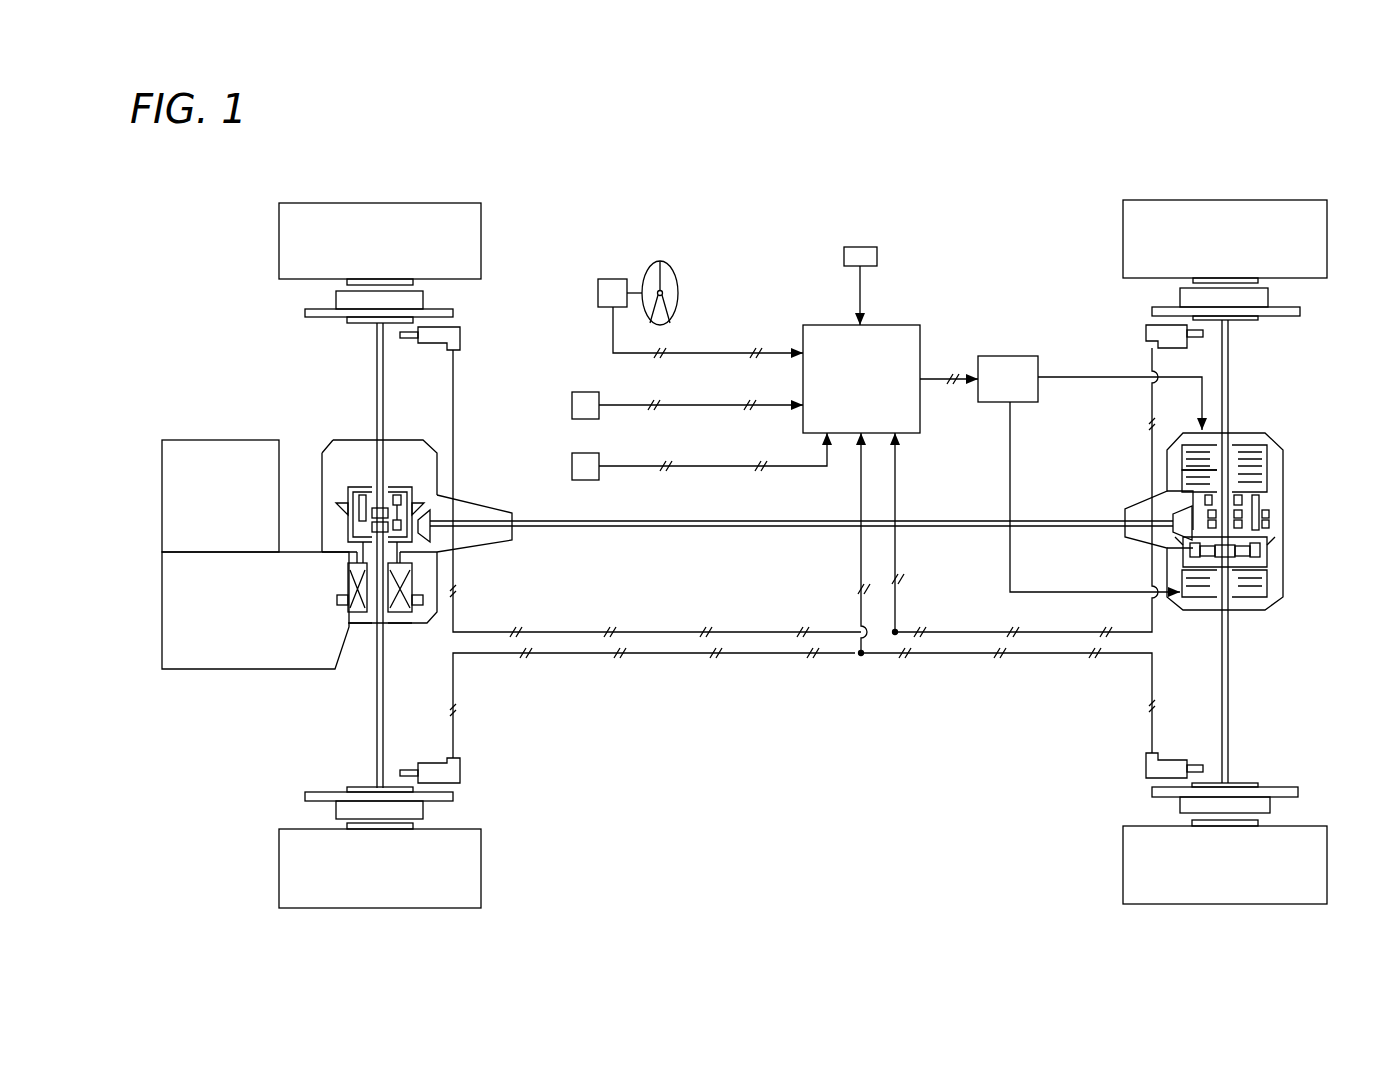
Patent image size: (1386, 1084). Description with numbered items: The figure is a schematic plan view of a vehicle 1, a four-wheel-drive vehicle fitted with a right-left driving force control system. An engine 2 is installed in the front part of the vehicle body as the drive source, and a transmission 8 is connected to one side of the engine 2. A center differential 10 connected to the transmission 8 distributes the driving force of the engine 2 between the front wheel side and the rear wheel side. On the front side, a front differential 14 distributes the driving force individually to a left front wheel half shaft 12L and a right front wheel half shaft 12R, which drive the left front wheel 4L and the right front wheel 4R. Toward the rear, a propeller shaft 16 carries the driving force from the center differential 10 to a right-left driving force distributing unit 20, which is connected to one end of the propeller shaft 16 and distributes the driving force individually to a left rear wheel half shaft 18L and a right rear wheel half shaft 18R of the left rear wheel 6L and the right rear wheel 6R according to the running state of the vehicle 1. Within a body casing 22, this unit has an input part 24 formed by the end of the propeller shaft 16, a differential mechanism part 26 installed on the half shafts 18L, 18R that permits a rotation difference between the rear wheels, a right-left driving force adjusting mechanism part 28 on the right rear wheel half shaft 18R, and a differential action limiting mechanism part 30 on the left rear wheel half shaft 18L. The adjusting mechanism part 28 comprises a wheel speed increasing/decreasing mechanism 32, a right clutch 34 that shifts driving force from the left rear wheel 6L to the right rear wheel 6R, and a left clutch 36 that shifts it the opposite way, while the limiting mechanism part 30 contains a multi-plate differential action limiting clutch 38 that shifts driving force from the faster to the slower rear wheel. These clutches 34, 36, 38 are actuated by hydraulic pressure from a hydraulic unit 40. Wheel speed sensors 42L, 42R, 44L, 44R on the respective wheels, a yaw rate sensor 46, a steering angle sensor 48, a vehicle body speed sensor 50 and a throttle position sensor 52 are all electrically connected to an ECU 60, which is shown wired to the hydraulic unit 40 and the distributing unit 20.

The vehicle 1 is at (670, 222).
The engine 2 is at (180, 440).
The right front wheel 4R is at (481, 215).
The left front wheel 4L is at (481, 882).
The right rear wheel 6R is at (1123, 220).
The left rear wheel 6L is at (1123, 878).
The transmission 8 is at (180, 669).
The center differential 10 is at (417, 538).
The right front wheel half shaft 12R is at (375, 358).
The left front wheel half shaft 12L is at (375, 735).
The front differential 14 is at (356, 483).
The propeller shaft 16 is at (1208, 540).
The right rear wheel half shaft 18R is at (1230, 370).
The left rear wheel half shaft 18L is at (1230, 672).
The right-left driving force distributing unit 20 is at (1290, 520).
The body casing 22 is at (1167, 567).
The input part 24 is at (1167, 532).
The differential mechanism part 26 is at (1267, 558).
The right-left driving force adjusting mechanism part 28 is at (1276, 460).
The differential action limiting mechanism part 30 is at (1270, 593).
The wheel speed increasing/decreasing mechanism 32 is at (1259, 500).
The right clutch 34 is at (1193, 453).
The left clutch 36 is at (1183, 482).
The differential action limiting clutch 38 is at (1200, 597).
The hydraulic unit 40 is at (1000, 356).
The wheel speed sensor 42R is at (460, 337).
The wheel speed sensor 42L is at (460, 768).
The wheel speed sensor 44R is at (1146, 335).
The wheel speed sensor 44L is at (1146, 766).
The yaw rate sensor 46 is at (857, 247).
The steering angle sensor 48 is at (598, 290).
The vehicle body speed sensor 50 is at (572, 405).
The throttle position sensor 52 is at (572, 465).
The ECU 60 is at (819, 325).